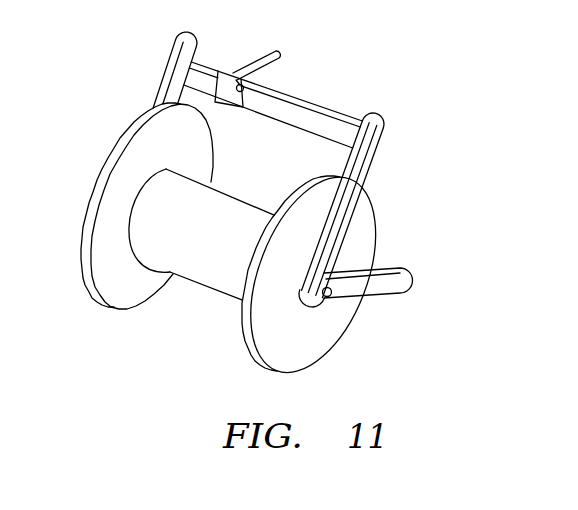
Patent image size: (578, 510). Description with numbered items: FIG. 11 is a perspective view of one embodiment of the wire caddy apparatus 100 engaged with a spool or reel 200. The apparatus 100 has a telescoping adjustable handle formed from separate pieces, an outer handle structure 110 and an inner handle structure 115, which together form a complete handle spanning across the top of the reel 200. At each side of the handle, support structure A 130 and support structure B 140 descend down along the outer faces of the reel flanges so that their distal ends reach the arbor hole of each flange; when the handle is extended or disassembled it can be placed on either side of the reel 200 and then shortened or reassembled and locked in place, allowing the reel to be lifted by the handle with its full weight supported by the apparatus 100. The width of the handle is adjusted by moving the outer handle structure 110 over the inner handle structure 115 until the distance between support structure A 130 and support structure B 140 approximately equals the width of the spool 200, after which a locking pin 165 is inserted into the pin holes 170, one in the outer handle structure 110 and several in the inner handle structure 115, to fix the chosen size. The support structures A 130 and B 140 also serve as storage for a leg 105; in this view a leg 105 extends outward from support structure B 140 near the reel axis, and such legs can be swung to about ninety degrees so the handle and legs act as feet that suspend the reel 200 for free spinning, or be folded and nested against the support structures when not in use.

The wire caddy apparatus 100 is at (287, 196).
The leg 105 is at (413, 271).
The outer handle structure 110 is at (273, 75).
The inner handle structure 115 is at (201, 69).
The support structure A 130 is at (166, 68).
The support structure B 140 is at (375, 165).
The locking pin 165 is at (262, 57).
The pin hole 170 is at (232, 93).
The spool or reel 200 is at (345, 328).